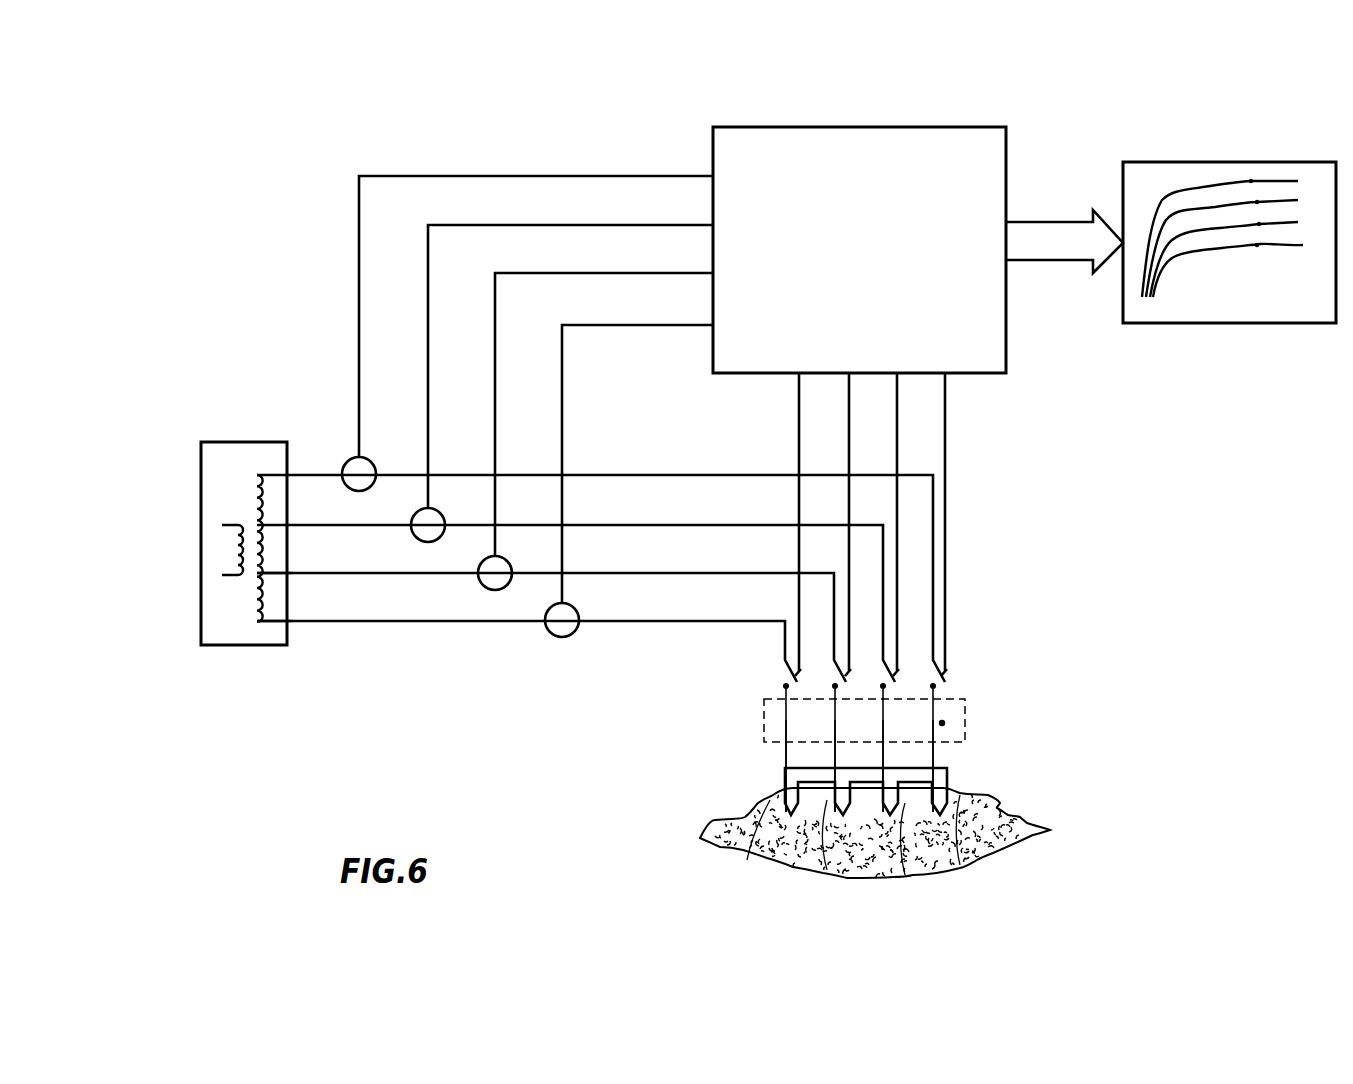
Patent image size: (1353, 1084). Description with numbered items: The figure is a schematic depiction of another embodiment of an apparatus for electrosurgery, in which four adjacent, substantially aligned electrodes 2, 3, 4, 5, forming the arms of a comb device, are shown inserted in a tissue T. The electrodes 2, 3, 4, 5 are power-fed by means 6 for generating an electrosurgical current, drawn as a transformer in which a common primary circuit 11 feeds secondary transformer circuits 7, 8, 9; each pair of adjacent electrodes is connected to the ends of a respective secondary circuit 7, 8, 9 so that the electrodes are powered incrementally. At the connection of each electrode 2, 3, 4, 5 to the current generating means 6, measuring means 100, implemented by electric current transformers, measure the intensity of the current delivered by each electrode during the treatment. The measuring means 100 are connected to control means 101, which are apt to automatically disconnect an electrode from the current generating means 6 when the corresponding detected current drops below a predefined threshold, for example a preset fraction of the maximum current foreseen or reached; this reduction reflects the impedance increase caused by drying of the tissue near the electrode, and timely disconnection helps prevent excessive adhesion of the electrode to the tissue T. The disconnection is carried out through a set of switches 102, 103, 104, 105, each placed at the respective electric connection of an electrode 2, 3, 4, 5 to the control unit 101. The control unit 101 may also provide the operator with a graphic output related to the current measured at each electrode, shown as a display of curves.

The control means 101 is at (1006, 150).
The means for measuring the intensity of the current 100 is at (357, 492).
The means for generating an electrosurgical current 6 is at (230, 646).
The secondary transformer circuit 9 is at (252, 497).
The primary circuit 11 is at (235, 539).
The secondary transformer circuit 8 is at (250, 567).
The secondary transformer circuit 7 is at (252, 602).
The switch 102 is at (790, 717).
The switch 103 is at (835, 723).
The switch 104 is at (900, 733).
The switch 105 is at (942, 723).
The tissue T is at (700, 838).
The electrode 2 is at (759, 853).
The electrode 3 is at (835, 876).
The electrode 4 is at (898, 877).
The electrode 5 is at (992, 858).